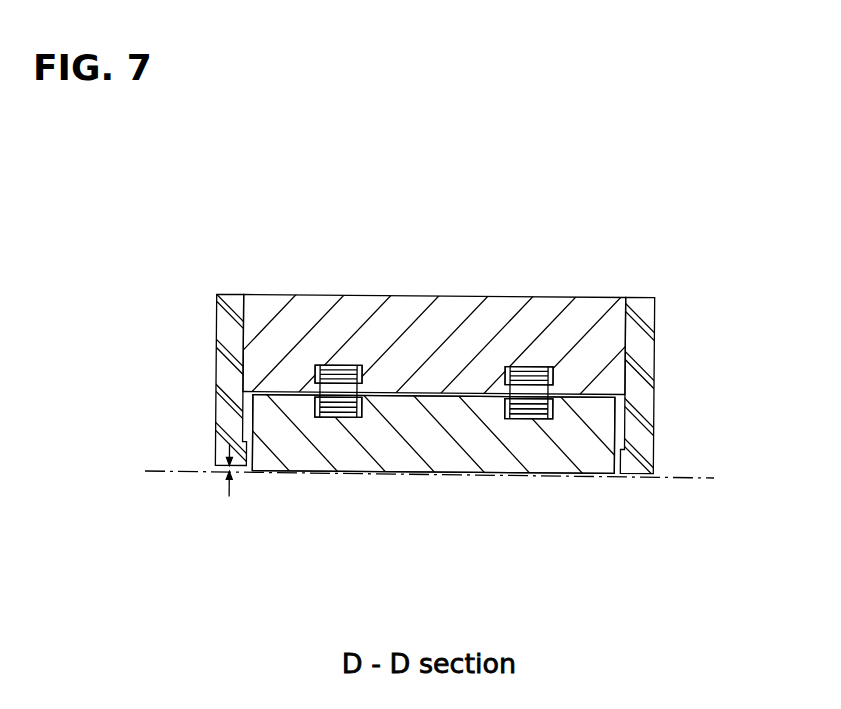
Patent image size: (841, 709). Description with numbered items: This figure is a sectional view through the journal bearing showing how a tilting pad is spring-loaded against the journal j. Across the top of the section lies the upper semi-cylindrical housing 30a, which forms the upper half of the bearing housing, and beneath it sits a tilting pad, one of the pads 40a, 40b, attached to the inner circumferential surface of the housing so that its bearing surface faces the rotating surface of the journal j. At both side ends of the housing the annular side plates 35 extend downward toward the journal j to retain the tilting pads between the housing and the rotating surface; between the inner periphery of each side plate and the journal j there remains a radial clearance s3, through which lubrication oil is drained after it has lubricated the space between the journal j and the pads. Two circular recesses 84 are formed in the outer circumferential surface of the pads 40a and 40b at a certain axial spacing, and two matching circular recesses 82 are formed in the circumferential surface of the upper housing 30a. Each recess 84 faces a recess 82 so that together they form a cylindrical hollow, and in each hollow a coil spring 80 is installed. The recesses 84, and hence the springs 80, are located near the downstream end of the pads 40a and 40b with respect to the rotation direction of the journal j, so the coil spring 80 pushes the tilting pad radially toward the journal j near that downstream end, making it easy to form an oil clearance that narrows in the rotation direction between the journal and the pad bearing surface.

The upper semi-cylindrical housing 30a is at (463, 309).
The tilting pad 40a is at (454, 462).
The tilting pad 40b is at (433, 503).
The annular side plate 35 is at (216, 371).
The coil spring 80 is at (348, 366).
The circular recess 82 is at (315, 379).
The circular recess 84 is at (364, 401).
The journal j is at (695, 478).
The radial clearance s3 is at (245, 473).